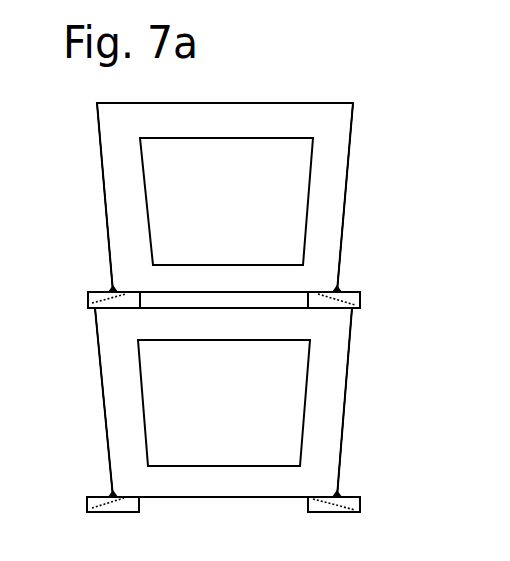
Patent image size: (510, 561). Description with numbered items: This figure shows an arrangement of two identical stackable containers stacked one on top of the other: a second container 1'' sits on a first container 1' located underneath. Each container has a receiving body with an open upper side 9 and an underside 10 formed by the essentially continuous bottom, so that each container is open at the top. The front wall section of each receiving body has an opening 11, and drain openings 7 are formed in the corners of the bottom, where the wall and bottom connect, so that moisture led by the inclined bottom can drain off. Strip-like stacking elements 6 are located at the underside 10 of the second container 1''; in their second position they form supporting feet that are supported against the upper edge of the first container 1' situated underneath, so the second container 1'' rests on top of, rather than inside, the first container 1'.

The second container 1'' is at (185, 197).
The first container 1' is at (185, 402).
The stacking element 6 is at (358, 302).
The drain opening 7 is at (118, 290).
The upper side 9 is at (370, 106).
The underside 10 is at (352, 283).
The opening 11 is at (305, 205).